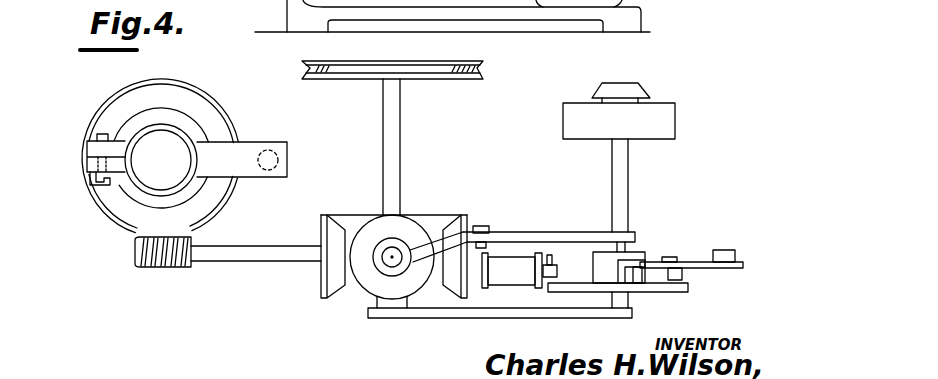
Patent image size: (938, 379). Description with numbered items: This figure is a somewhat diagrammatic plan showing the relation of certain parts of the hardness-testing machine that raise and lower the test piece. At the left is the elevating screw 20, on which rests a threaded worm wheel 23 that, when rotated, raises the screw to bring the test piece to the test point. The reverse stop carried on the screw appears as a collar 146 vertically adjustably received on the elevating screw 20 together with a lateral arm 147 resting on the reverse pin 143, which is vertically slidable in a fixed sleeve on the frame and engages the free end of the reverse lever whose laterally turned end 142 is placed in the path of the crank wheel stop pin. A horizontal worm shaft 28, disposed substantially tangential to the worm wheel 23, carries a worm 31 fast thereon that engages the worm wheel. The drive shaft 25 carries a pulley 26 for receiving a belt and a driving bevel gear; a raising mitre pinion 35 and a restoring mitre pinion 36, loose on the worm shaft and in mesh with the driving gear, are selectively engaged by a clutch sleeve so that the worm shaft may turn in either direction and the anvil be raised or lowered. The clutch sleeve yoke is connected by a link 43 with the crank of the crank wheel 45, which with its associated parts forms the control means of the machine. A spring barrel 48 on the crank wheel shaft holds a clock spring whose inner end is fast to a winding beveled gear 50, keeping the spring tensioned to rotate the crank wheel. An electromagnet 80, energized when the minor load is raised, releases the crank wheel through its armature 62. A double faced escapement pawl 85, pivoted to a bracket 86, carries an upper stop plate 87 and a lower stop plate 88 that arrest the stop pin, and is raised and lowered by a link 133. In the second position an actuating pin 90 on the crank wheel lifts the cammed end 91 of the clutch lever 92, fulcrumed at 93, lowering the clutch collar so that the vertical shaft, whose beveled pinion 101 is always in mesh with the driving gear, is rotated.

The elevating screw 20 is at (186, 138).
The threaded worm wheel 23 is at (203, 222).
The drive shaft 25 is at (398, 153).
The pulley 26 is at (449, 80).
The horizontal worm shaft 28 is at (250, 262).
The worm 31 is at (167, 266).
The raising mitre pinion 35 is at (335, 286).
The restoring mitre pinion 36 is at (457, 290).
The link 43 is at (463, 318).
The crank wheel 45 is at (670, 292).
The spring barrel 48 is at (675, 120).
The winding beveled gear 50 is at (640, 88).
The armature 62 is at (557, 271).
The electromagnet 80 is at (511, 265).
The double faced escapement pawl 85 is at (700, 268).
The bracket 86 is at (735, 250).
The upper stop plate 87 is at (618, 268).
The lower stop plate 88 is at (640, 284).
The actuating pin 90 is at (640, 238).
The cammed end 91 is at (617, 218).
The clutch lever 92 is at (558, 238).
The fulcrum 93 is at (482, 227).
The beveled pinion 101 is at (415, 218).
The link 133 is at (668, 256).
The laterally turned end 142 is at (678, 268).
The reverse pin 143 is at (277, 173).
The collar 146 is at (132, 128).
The lateral arm 147 is at (250, 150).